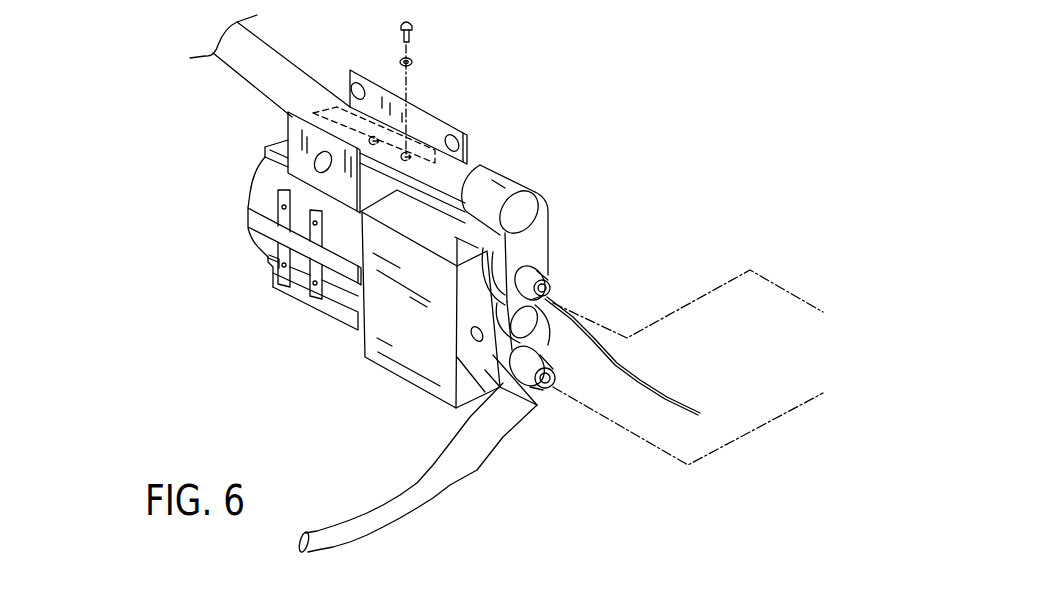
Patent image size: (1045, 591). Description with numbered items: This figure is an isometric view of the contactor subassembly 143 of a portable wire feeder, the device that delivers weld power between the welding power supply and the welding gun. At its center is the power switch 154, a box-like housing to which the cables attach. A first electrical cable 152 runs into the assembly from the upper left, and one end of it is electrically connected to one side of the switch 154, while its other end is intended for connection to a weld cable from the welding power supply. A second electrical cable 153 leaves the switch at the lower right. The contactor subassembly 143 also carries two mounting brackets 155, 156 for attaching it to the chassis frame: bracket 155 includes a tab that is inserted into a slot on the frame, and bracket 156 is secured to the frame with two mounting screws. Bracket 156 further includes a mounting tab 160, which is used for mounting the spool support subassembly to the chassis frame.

The contactor subassembly 143 is at (606, 172).
The first electrical cable 152 is at (262, 49).
The second electrical cable 153 is at (453, 482).
The power switch 154 is at (417, 363).
The mounting bracket 155 is at (313, 316).
The mounting bracket 156 is at (425, 120).
The mounting tab 160 is at (293, 150).